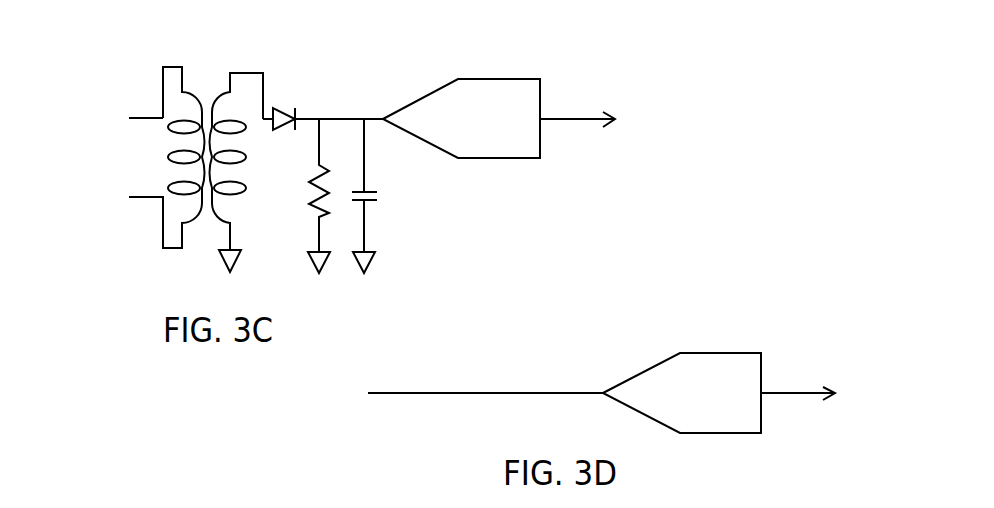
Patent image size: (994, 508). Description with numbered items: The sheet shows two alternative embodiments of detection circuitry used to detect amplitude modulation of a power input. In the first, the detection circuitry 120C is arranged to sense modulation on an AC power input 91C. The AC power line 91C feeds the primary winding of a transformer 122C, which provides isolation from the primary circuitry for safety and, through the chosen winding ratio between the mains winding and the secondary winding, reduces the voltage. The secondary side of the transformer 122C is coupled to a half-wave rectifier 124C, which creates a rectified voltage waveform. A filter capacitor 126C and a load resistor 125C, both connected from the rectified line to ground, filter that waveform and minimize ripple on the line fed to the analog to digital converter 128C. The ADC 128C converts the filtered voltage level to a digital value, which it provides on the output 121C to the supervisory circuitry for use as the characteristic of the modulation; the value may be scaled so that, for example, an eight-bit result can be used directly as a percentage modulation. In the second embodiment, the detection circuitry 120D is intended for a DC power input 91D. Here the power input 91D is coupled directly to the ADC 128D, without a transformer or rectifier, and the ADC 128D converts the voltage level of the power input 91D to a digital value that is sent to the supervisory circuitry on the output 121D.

In FIG. 3C, the AC power input 91C is at (112, 105).
In FIG. 3C, the transformer 122C is at (222, 50).
In FIG. 3C, the half-wave rectifier 124C is at (287, 110).
In FIG. 3C, the load resistor 125C is at (317, 198).
In FIG. 3C, the filter capacitor 126C is at (390, 207).
In FIG. 3C, the analog to digital converter 128C is at (508, 125).
In FIG. 3C, the detection circuitry 120C is at (544, 107).
In FIG. 3C, the output 121C is at (587, 122).
In FIG. 3D, the DC power input 91D is at (458, 390).
In FIG. 3D, the analog to digital converter 128D is at (735, 402).
In FIG. 3D, the detection circuitry 120D is at (727, 361).
In FIG. 3D, the output 121D is at (807, 397).